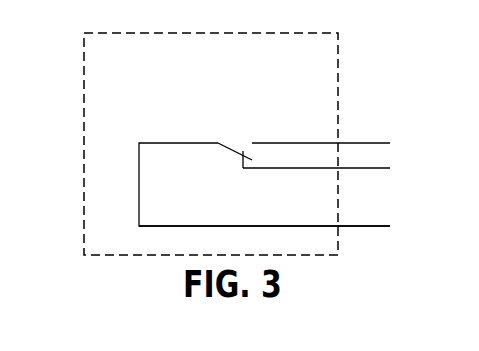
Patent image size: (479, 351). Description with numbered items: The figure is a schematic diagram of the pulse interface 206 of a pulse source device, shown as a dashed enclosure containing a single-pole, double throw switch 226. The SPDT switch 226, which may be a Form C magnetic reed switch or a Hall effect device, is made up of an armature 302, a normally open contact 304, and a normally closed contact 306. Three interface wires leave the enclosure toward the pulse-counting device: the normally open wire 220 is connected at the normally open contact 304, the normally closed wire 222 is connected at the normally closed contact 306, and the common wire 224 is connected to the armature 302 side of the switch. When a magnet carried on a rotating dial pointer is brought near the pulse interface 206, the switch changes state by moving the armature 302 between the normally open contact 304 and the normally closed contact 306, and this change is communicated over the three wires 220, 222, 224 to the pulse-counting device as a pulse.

The pulse interface 206 is at (297, 62).
The single-pole, double throw switch 226 is at (170, 107).
The armature 302 is at (230, 157).
The normally open contact 304 is at (261, 125).
The normally closed contact 306 is at (250, 170).
The normally open wire 220 is at (340, 146).
The normally closed wire 222 is at (336, 170).
The common wire 224 is at (284, 227).